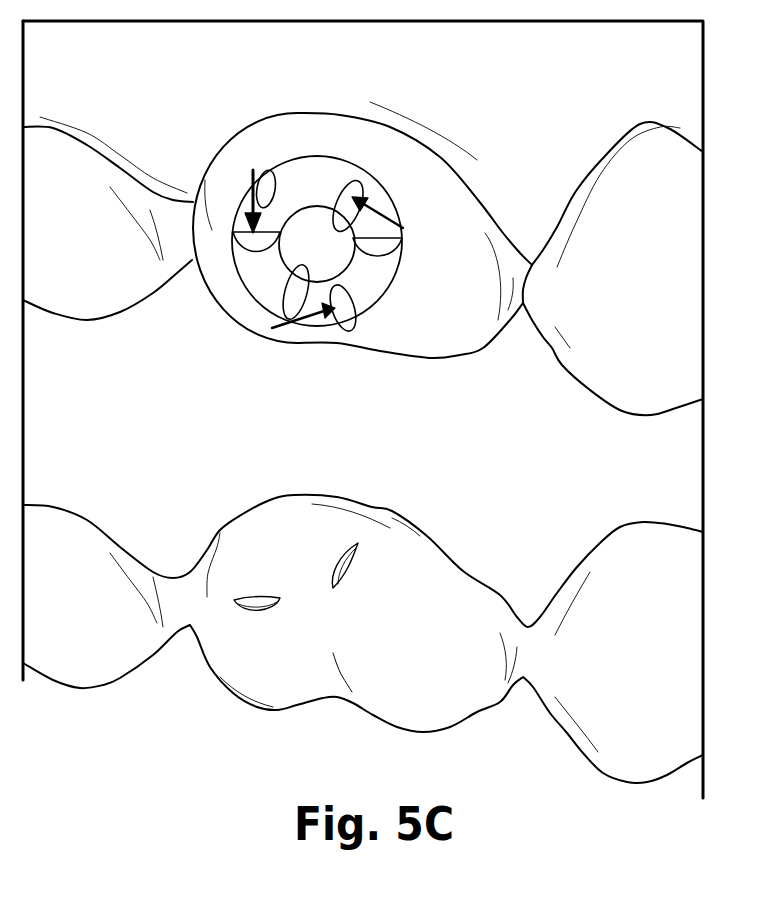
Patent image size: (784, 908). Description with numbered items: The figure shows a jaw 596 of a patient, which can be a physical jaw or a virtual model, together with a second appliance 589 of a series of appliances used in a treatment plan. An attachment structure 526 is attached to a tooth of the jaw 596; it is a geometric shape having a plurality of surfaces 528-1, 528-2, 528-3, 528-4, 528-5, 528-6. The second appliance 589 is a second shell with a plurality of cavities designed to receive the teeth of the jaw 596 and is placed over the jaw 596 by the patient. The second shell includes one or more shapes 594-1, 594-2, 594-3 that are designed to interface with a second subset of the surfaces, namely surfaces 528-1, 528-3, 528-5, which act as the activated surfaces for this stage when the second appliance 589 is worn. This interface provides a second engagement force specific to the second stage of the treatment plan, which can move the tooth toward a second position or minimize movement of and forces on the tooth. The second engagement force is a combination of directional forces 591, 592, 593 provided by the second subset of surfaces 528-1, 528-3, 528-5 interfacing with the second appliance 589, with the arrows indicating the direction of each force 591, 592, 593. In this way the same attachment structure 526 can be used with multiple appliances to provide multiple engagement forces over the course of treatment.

The attachment structure 526 is at (316, 157).
The surface 528-1 is at (352, 192).
The surface 528-2 is at (396, 236).
The surface 528-3 is at (350, 322).
The surface 528-4 is at (317, 244).
The surface 528-5 is at (248, 231).
The surface 528-6 is at (266, 206).
The second appliance 589 is at (117, 652).
The force 591 is at (249, 222).
The force 592 is at (383, 216).
The force 593 is at (290, 322).
The shape 594-1 is at (358, 571).
The shape 594-2 is at (337, 676).
The shape 594-3 is at (262, 600).
The jaw 596 is at (720, 23).